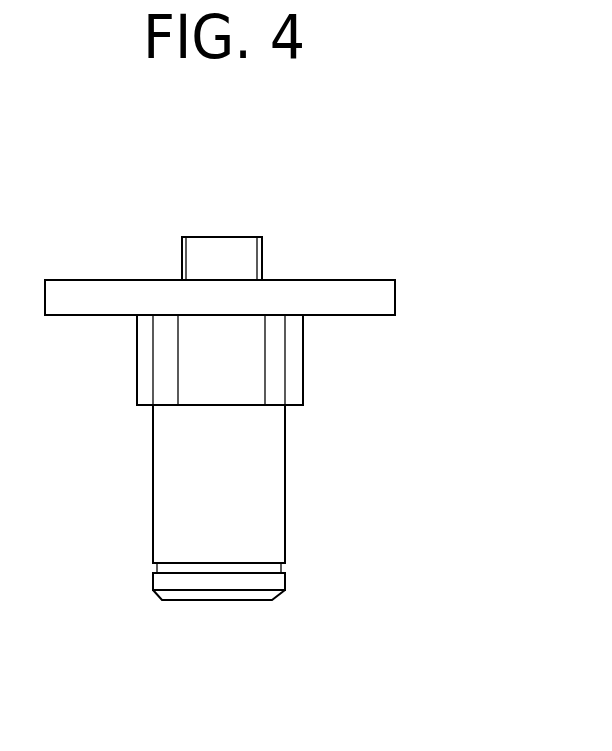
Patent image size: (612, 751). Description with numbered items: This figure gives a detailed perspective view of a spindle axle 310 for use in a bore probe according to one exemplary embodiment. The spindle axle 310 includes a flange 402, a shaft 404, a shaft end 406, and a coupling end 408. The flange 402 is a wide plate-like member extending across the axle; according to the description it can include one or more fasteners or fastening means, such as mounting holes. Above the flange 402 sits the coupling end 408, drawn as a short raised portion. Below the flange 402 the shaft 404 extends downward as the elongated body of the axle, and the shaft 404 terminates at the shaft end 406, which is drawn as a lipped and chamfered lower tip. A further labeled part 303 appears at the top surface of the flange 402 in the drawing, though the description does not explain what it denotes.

The spindle axle 310 is at (207, 214).
The mounting block 303 is at (292, 280).
The flange 402 is at (395, 307).
The shaft 404 is at (285, 467).
The shaft end 406 is at (272, 600).
The coupling end 408 is at (181, 272).